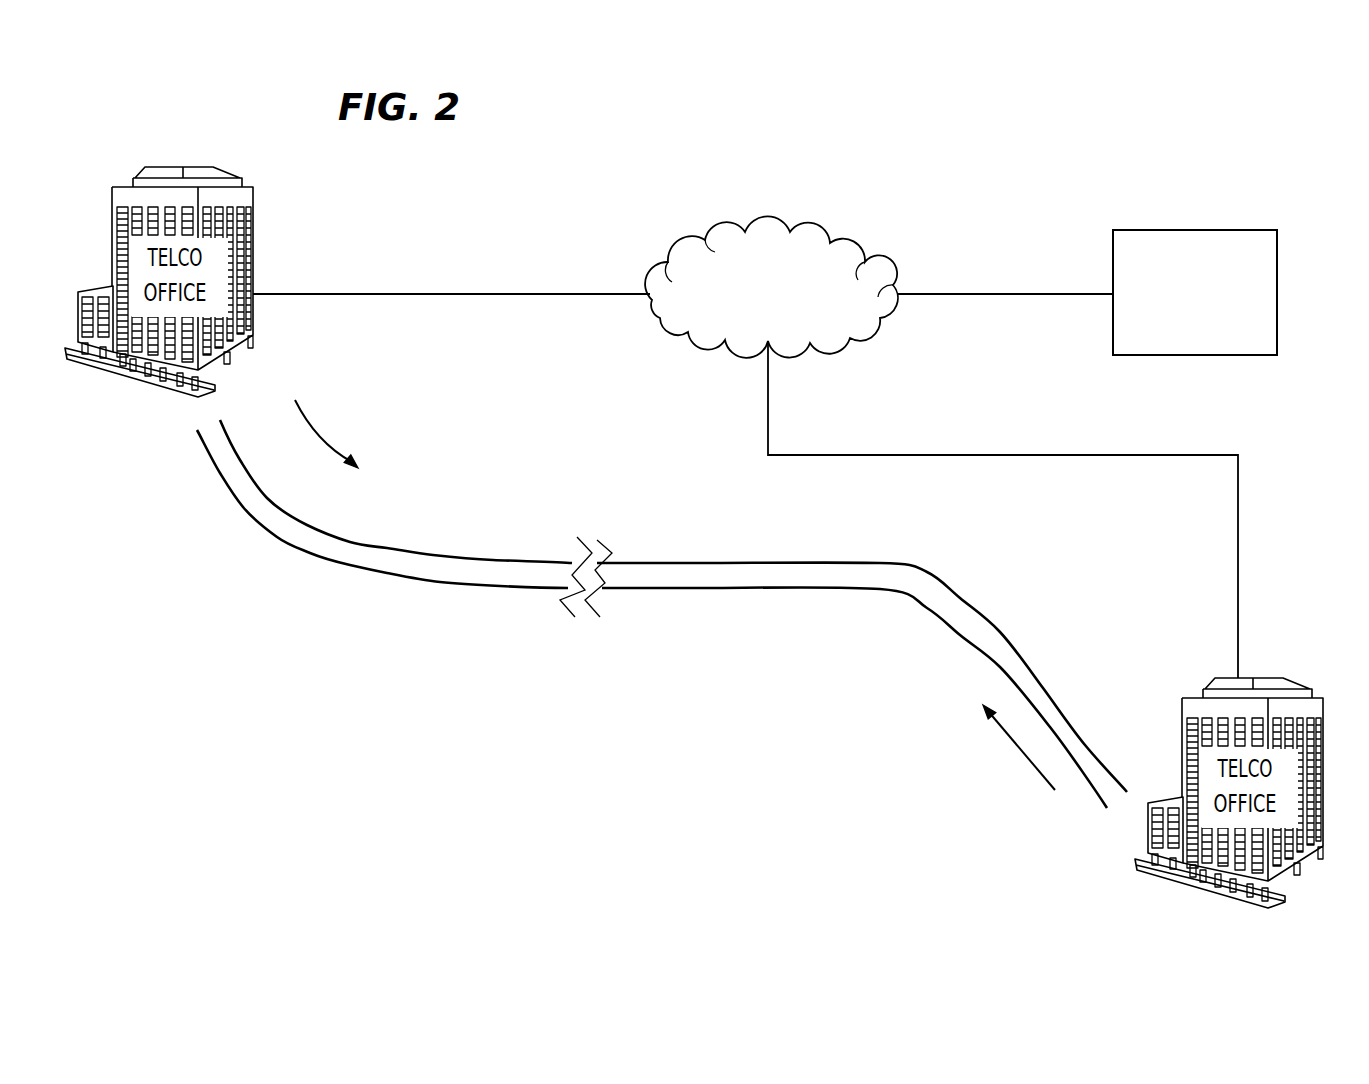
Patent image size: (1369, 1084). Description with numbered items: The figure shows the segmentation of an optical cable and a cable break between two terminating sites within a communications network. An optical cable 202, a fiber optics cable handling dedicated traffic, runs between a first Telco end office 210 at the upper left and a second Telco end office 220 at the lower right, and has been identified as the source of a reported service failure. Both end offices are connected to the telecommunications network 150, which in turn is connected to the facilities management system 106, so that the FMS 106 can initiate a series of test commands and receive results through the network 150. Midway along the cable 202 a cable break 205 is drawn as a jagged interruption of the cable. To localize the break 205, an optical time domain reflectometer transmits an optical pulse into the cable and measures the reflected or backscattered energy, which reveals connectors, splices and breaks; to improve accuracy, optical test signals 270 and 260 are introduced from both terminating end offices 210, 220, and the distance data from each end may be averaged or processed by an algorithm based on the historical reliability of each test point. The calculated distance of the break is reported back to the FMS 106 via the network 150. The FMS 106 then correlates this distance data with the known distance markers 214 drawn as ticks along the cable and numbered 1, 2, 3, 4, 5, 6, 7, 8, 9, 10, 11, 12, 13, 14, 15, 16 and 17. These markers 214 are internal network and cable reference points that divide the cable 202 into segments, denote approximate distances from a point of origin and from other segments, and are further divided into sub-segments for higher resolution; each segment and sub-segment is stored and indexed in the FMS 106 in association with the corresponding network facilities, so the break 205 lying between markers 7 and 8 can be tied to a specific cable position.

The Telco end office 210 is at (207, 173).
The Telco end office 220 is at (1277, 684).
The telecommunications network 150 is at (750, 235).
The facilities management system 106 is at (1188, 233).
The optical cable 202 is at (216, 472).
The cable break 205 is at (580, 625).
The distance markers 214 is at (353, 488).
The optical test signal 270 is at (315, 430).
The optical test signal 260 is at (1013, 750).
The distance marker 1 is at (223, 428).
The distance marker 2 is at (265, 498).
The distance marker 3 is at (320, 525).
The distance marker 4 is at (377, 540).
The distance marker 5 is at (433, 557).
The distance marker 6 is at (493, 561).
The distance marker 7 is at (553, 563).
The distance marker 8 is at (617, 563).
The distance marker 9 is at (678, 563).
The distance marker 10 is at (742, 563).
The distance marker 11 is at (803, 563).
The distance marker 12 is at (865, 563).
The distance marker 13 is at (923, 573).
The distance marker 14 is at (973, 610).
The distance marker 15 is at (1020, 655).
The distance marker 16 is at (1065, 705).
The distance marker 17 is at (1107, 762).